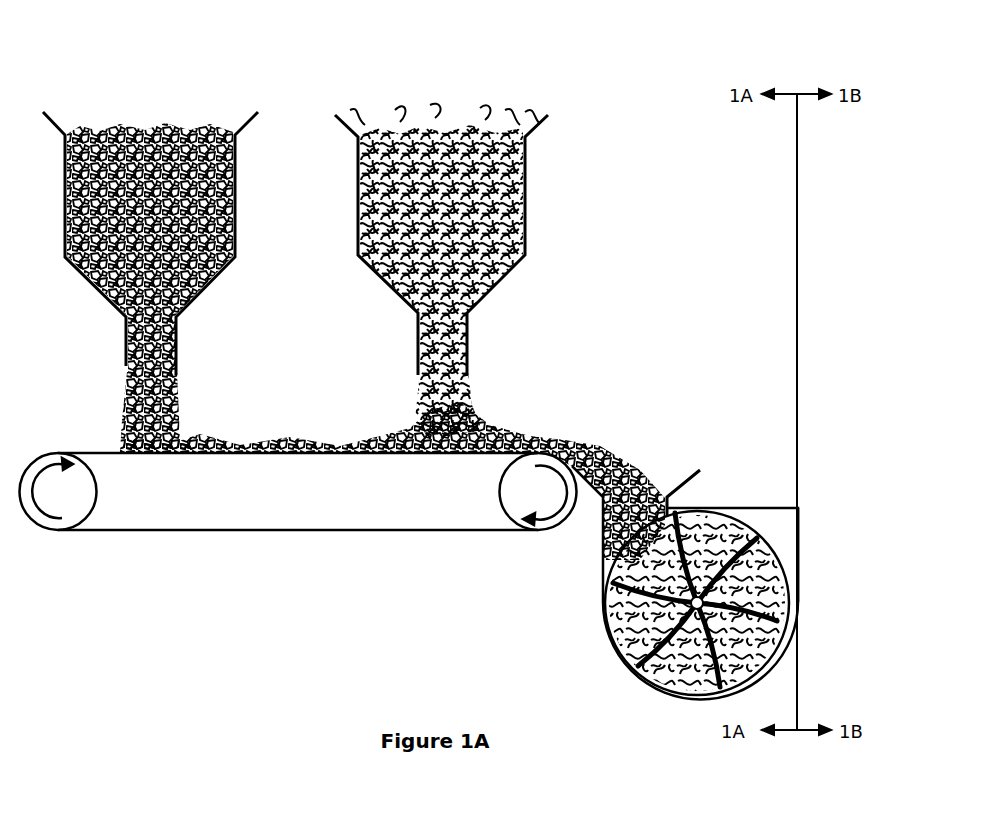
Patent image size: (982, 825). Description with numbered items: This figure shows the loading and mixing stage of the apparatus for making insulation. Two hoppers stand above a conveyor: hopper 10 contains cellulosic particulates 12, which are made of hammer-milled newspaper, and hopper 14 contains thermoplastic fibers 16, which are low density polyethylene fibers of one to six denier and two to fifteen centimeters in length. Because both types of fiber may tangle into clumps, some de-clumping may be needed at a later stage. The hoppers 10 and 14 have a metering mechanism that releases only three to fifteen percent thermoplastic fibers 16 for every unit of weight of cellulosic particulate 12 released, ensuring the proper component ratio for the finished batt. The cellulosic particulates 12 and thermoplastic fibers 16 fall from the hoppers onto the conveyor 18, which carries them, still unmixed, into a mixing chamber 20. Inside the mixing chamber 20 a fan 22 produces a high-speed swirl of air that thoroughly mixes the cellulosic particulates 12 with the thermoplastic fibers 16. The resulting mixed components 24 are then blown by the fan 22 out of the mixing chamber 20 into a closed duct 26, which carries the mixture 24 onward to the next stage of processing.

The hopper 10 is at (43, 113).
The cellulosic particulates 12 is at (197, 125).
The hopper 14 is at (344, 113).
The thermoplastic fibers 16 is at (427, 115).
The conveyor 18 is at (267, 487).
The mixing chamber 20 is at (603, 550).
The fan 22 is at (603, 605).
The mixed components 24 is at (797, 541).
The closed duct 26 is at (762, 507).